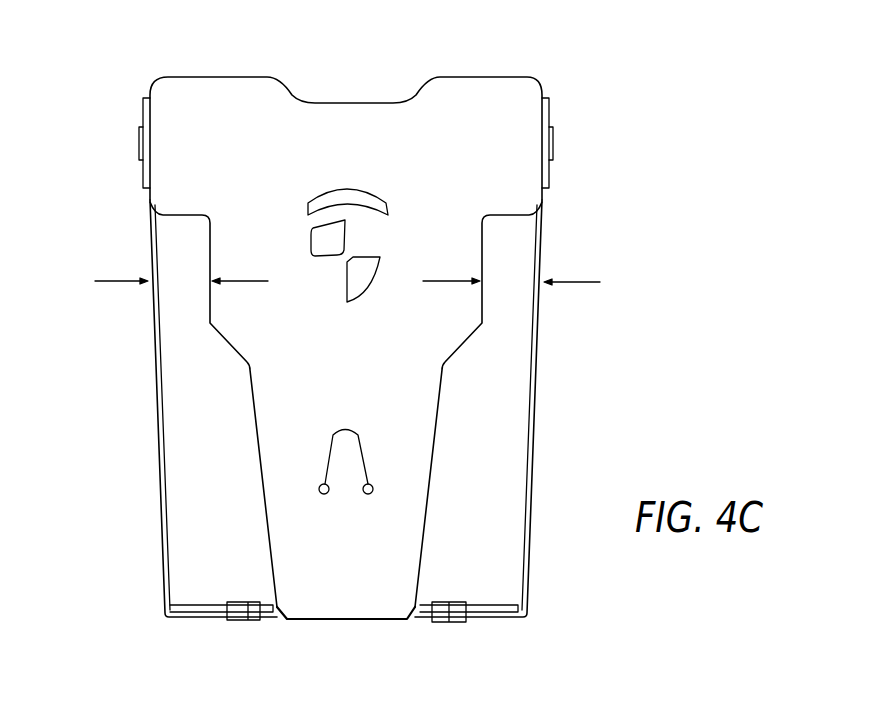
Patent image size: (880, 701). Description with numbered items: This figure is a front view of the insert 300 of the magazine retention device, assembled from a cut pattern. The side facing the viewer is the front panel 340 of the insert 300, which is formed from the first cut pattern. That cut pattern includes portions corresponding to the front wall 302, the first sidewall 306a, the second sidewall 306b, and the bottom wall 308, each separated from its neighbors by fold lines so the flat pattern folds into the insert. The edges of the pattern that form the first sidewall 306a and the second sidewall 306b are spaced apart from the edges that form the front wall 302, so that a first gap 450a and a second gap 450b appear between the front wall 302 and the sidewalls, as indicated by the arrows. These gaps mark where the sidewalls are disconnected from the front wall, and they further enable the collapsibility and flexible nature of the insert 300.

The insert 300 is at (531, 49).
The front panel 340 is at (86, 136).
The front wall 302 is at (260, 475).
The first sidewall 306a is at (155, 405).
The second sidewall 306b is at (536, 403).
The bottom wall 308 is at (202, 619).
The first gap 450a is at (155, 282).
The second gap 450b is at (537, 282).